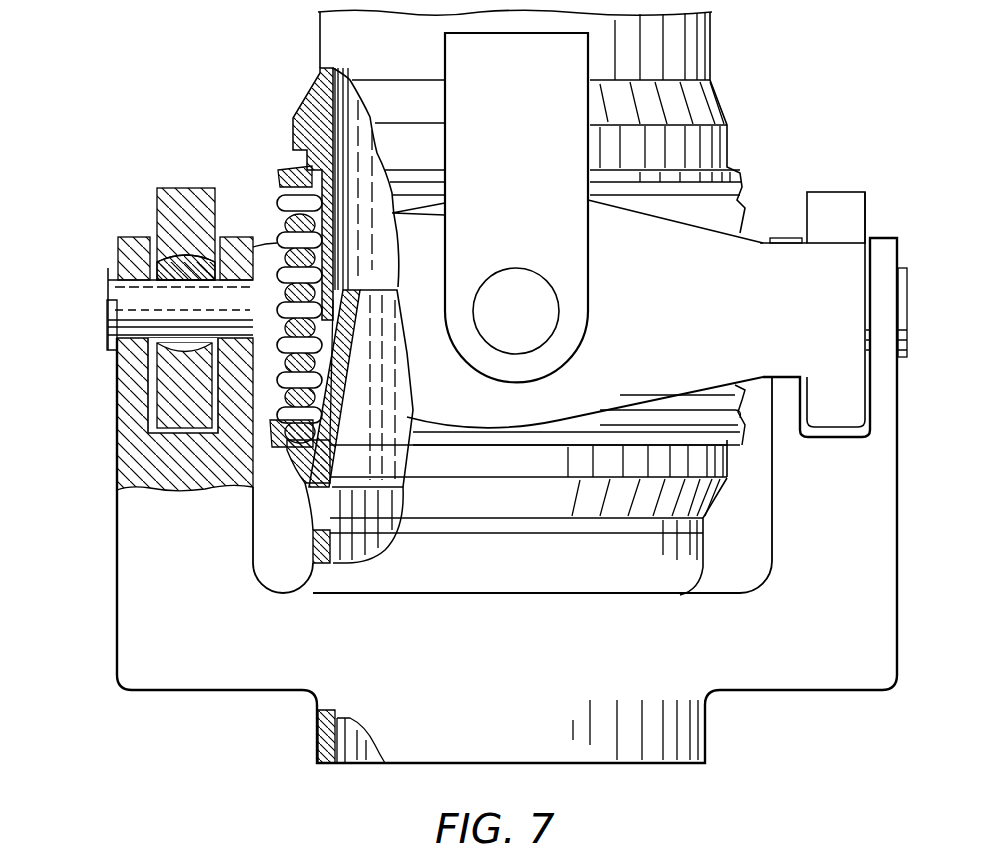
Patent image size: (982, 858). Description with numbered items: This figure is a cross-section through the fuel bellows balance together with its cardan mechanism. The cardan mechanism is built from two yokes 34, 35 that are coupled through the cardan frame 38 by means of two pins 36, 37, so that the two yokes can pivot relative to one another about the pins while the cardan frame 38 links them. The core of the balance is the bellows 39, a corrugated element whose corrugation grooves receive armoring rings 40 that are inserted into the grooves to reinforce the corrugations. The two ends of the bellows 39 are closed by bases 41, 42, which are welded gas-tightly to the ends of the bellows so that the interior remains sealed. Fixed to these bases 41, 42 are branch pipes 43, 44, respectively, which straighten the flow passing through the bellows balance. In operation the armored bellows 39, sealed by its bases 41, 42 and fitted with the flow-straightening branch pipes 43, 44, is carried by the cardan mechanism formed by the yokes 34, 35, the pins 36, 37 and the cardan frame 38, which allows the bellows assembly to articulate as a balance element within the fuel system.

The yoke of the cardan mechanism 34 is at (243, 675).
The yoke of the cardan mechanism 35 is at (573, 257).
The pin of the cardan mechanism 36 is at (130, 303).
The pin of the cardan mechanism 37 is at (543, 323).
The cardan frame 38 is at (195, 212).
The bellows 39 is at (343, 437).
The armoring rings 40 is at (333, 360).
The base 41 is at (330, 487).
The base 42 is at (310, 103).
The branch pipe 43 is at (323, 453).
The branch pipe 44 is at (290, 163).